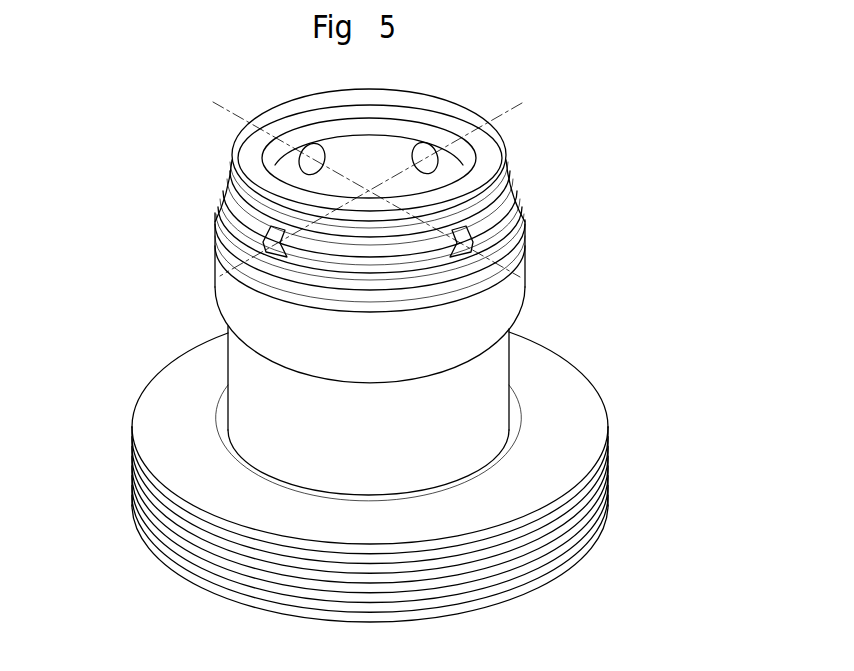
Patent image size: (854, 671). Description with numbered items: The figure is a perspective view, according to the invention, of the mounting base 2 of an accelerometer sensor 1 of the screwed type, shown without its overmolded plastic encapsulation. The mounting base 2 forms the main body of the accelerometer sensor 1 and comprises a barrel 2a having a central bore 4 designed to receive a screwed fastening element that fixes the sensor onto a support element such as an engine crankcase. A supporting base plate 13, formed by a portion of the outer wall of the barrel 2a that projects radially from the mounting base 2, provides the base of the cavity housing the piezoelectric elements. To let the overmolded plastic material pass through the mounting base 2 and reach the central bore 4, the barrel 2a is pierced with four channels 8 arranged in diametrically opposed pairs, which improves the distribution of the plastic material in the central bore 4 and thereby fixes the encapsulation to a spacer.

The accelerometer sensor 1 is at (578, 204).
The mounting base 2 is at (567, 430).
The barrel 2a is at (483, 288).
The central bore 4 is at (403, 136).
The channel 8 is at (423, 157).
The supporting base plate 13 is at (163, 558).